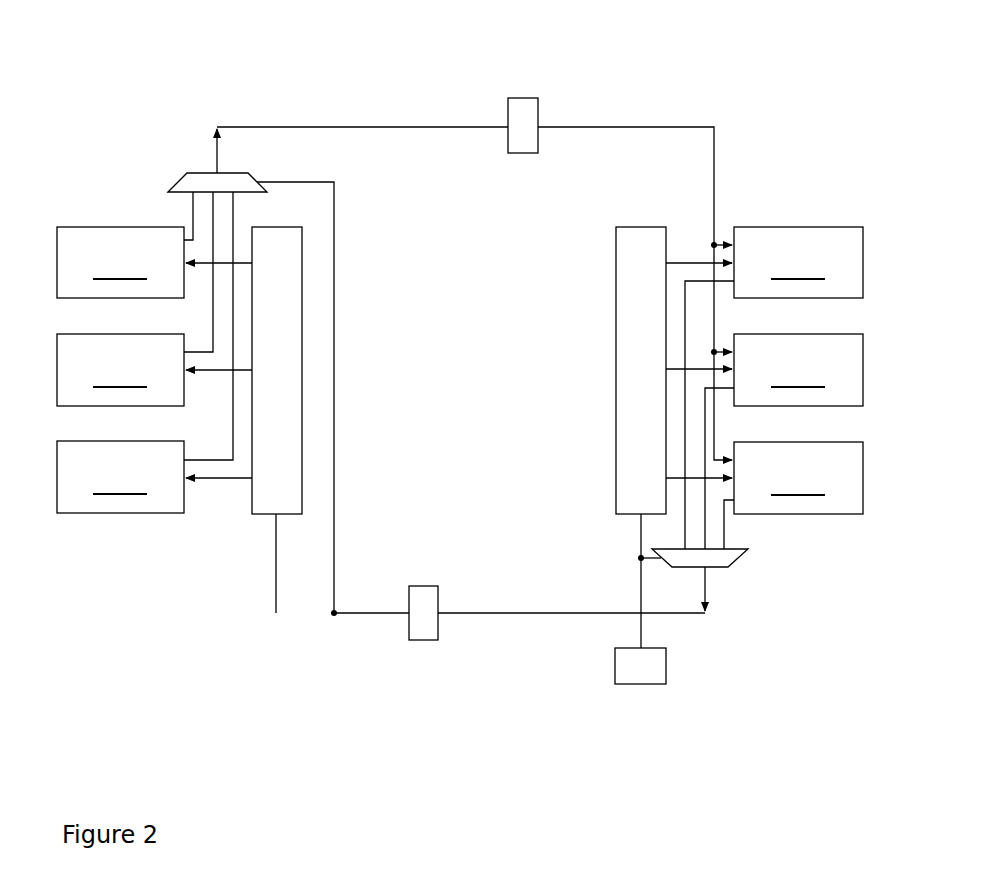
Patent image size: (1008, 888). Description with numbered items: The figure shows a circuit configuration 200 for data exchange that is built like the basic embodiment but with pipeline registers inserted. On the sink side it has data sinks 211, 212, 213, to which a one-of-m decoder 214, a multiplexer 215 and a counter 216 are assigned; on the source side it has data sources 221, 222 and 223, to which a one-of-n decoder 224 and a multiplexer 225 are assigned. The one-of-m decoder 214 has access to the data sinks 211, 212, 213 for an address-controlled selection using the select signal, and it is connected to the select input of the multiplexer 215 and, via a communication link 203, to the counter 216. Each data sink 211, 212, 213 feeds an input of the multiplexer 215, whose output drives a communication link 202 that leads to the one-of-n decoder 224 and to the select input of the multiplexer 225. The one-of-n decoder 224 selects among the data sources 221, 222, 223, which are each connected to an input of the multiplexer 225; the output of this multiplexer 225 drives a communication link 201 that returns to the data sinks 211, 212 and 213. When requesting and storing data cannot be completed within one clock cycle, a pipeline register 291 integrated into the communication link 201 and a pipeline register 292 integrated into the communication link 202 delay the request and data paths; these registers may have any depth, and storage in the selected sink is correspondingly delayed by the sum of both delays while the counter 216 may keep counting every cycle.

The circuit configuration 200 is at (288, 90).
The communication link 201 is at (682, 120).
The communication link 202 is at (554, 617).
The communication link 203 is at (635, 585).
The data sink 211 is at (774, 388).
The data sink 212 is at (784, 441).
The data sink 213 is at (793, 495).
The 1-of-m decoder 214 is at (640, 220).
The multiplexer 215 is at (743, 560).
The counter 216 is at (668, 657).
The data source 221 is at (125, 245).
The data source 222 is at (135, 299).
The data source 223 is at (145, 352).
The 1-of-n decoder 224 is at (267, 518).
The multiplexer 225 is at (175, 176).
The pipeline register 291 is at (523, 92).
The pipeline register 292 is at (425, 582).